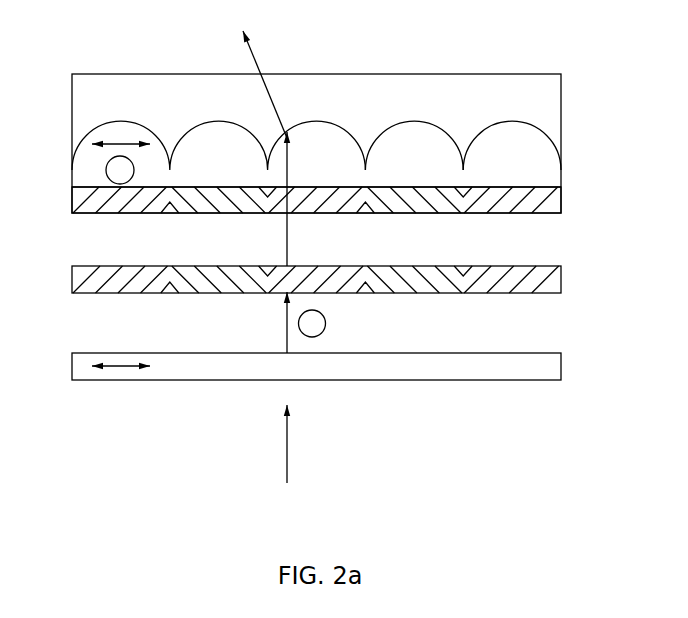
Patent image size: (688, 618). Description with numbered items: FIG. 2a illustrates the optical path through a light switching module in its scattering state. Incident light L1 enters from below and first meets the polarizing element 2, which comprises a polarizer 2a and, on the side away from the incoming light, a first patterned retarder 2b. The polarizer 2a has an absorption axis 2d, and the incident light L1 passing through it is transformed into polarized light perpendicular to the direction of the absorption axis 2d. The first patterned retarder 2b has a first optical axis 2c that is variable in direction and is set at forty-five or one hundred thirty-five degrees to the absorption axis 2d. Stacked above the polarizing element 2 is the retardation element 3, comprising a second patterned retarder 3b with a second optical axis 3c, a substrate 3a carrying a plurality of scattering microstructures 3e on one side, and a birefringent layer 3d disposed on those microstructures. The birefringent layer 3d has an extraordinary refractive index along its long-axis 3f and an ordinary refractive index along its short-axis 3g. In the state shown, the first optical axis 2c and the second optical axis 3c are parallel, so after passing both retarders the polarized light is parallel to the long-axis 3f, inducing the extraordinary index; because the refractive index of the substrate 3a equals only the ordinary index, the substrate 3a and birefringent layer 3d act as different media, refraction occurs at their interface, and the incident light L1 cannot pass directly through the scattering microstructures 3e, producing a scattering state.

The polarizing element 2 is at (67, 266).
The polarizer 2a is at (550, 370).
The first patterned retarder 2b is at (550, 285).
The first optical axis 2c is at (502, 278).
The absorption axis 2d is at (120, 370).
The retardation element 3 is at (67, 74).
The substrate 3a is at (542, 112).
The second patterned retarder 3b is at (550, 207).
The second optical axis 3c is at (495, 202).
The birefringent layer 3d is at (550, 177).
The scattering microstructures 3e is at (443, 113).
The long-axis 3f is at (121, 130).
The short-axis 3g is at (105, 181).
The incident light L1 is at (306, 444).